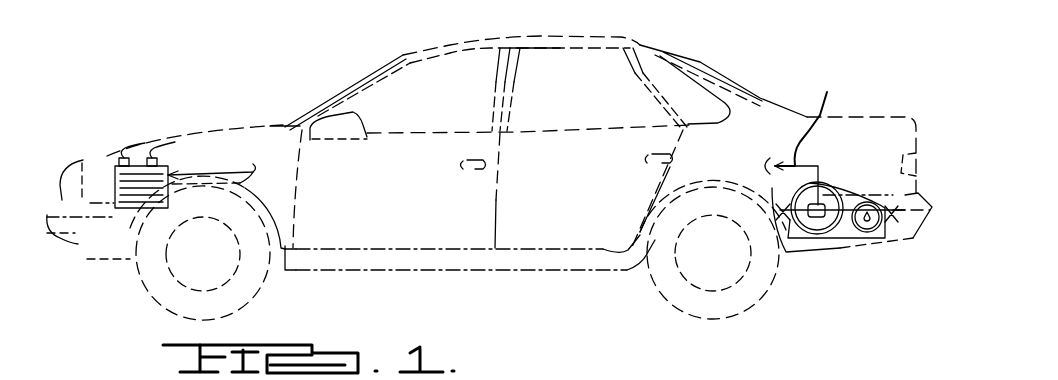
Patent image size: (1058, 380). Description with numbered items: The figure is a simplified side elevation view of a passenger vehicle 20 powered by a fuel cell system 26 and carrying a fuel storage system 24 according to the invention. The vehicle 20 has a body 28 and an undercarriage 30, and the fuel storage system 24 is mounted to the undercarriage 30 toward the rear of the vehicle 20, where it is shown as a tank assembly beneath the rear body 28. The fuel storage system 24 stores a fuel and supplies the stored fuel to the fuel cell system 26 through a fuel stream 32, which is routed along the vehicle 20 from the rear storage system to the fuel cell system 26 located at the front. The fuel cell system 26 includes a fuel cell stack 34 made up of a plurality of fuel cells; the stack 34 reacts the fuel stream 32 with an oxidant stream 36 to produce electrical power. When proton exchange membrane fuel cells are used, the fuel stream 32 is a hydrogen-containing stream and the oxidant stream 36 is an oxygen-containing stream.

The vehicle 20 is at (765, 50).
The fuel storage system 24 is at (834, 262).
The fuel cell system 26 is at (146, 118).
The body 28 is at (428, 222).
The undercarriage 30 is at (880, 255).
The fuel stream 32 is at (213, 177).
The fuel cell stack 34 is at (120, 208).
The oxidant stream 36 is at (106, 185).